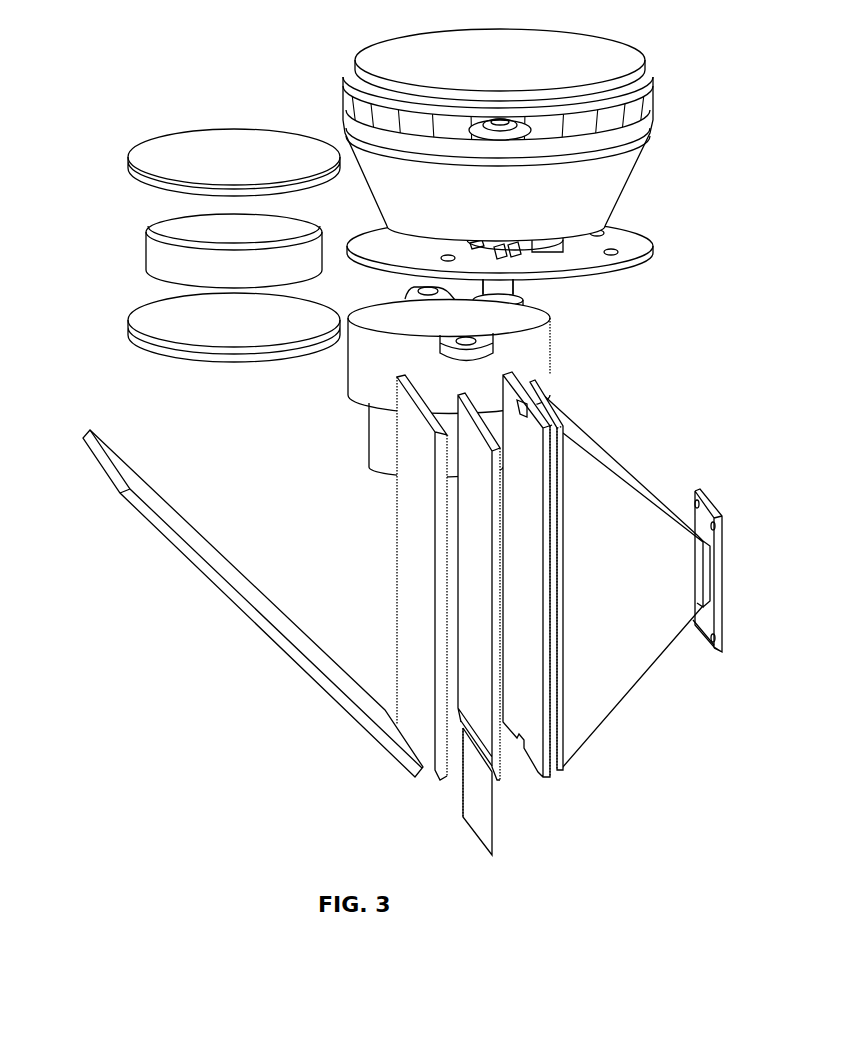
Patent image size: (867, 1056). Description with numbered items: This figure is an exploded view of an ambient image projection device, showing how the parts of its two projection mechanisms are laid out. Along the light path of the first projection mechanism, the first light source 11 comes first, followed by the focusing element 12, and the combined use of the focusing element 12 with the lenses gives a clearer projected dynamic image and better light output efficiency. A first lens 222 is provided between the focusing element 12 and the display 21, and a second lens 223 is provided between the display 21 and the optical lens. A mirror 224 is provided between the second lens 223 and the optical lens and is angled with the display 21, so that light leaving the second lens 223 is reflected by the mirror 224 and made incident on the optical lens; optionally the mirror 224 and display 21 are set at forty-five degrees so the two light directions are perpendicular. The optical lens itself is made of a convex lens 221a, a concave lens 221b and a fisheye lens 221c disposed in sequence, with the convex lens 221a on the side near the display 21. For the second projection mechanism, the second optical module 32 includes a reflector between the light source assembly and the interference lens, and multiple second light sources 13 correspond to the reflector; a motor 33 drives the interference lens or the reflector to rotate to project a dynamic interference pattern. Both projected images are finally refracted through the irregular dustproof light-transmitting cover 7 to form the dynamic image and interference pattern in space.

The dustproof light-transmitting cover 7 is at (425, 46).
The second optical module 32 is at (577, 173).
The second light source 13 is at (552, 248).
The motor 33 is at (515, 345).
The convex lens 221a is at (160, 330).
The concave lens 221b is at (165, 253).
The fisheye lens 221c is at (167, 153).
The mirror 224 is at (242, 595).
The second lens 223 is at (425, 512).
The display 21 is at (480, 553).
The first lens 222 is at (523, 590).
The focusing element 12 is at (660, 622).
The first light source 11 is at (712, 645).